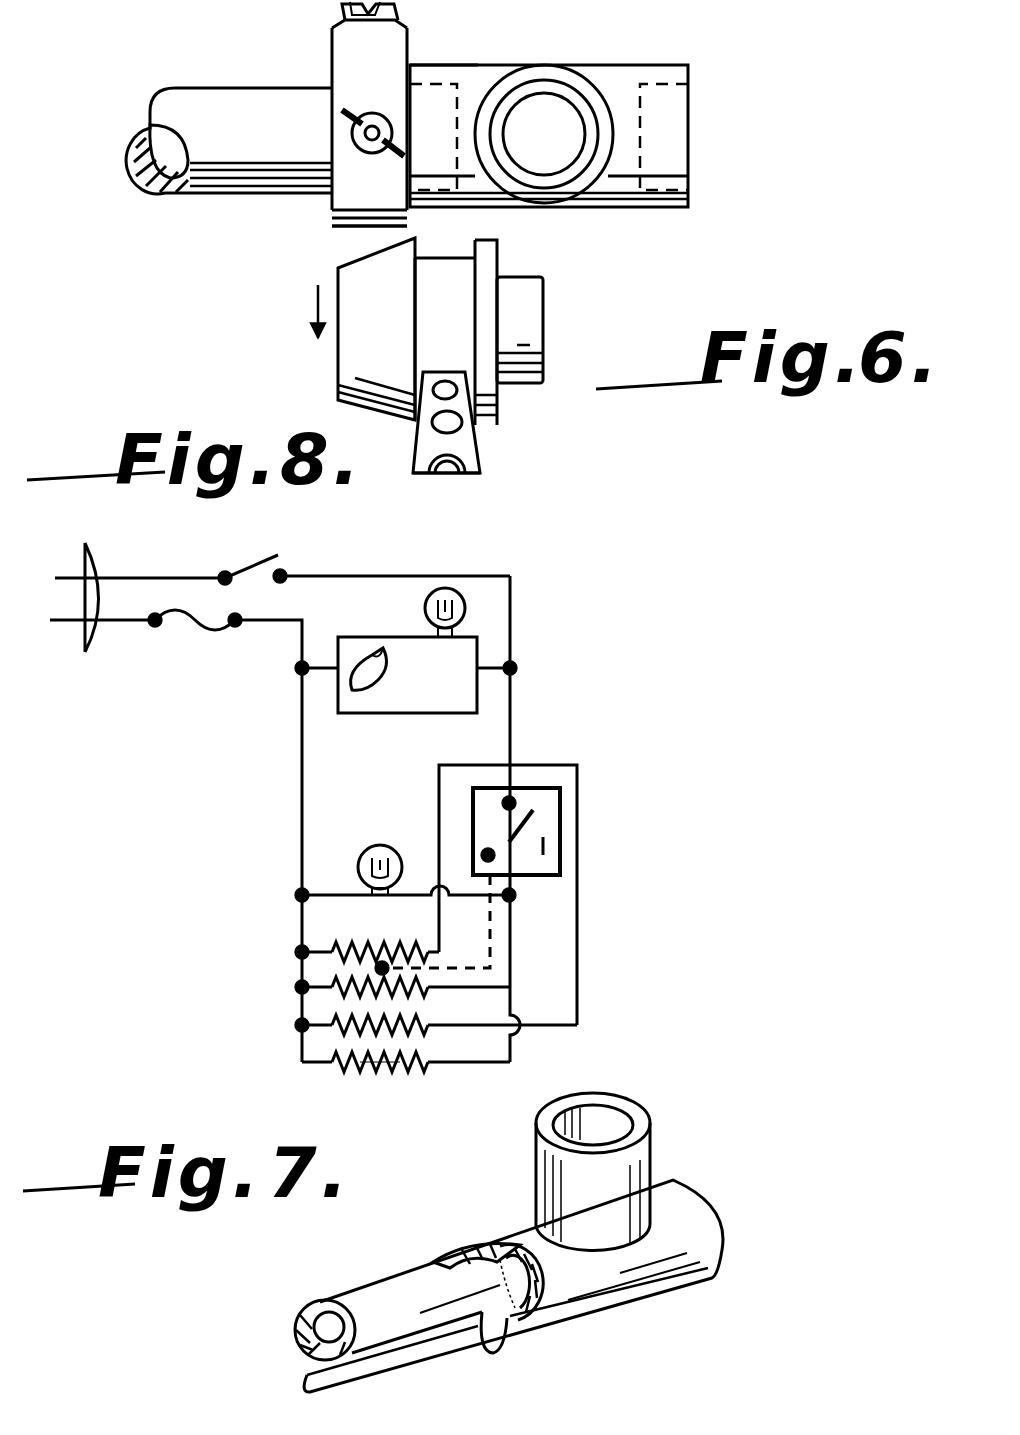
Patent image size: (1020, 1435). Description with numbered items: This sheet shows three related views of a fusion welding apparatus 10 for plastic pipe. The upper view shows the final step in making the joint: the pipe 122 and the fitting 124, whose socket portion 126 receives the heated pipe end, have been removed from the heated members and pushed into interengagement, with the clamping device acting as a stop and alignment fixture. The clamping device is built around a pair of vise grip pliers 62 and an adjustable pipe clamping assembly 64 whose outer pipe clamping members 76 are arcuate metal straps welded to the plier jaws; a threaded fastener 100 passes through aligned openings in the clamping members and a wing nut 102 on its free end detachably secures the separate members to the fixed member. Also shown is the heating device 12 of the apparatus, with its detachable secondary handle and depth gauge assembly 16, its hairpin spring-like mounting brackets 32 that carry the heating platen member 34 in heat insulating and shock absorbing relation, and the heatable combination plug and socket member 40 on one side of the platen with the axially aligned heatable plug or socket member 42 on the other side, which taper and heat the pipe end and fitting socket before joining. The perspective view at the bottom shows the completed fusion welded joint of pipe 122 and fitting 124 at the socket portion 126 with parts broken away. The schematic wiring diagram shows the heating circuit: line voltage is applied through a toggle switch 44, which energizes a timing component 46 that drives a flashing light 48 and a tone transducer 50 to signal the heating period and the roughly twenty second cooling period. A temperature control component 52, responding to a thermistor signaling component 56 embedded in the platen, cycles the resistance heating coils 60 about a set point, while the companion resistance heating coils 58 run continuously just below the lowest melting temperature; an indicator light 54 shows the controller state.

In FIG. 6, the apparatus 10 is at (494, 503).
In FIG. 6, the heating device 12 is at (482, 470).
In FIG. 6, the secondary handle and depth gauge assembly 16 is at (432, 32).
In FIG. 6, the hairpin spring-like mounting brackets 32 is at (465, 444).
In FIG. 6, the heating platen member 34 is at (455, 282).
In FIG. 6, the combination plug and socket member 40 is at (348, 355).
In FIG. 6, the heatable plug or socket member 42 is at (545, 312).
In FIG. 8, the toggle switch 44 is at (255, 555).
In FIG. 8, the timing component 46 is at (393, 703).
In FIG. 8, the flashing light 48 is at (425, 606).
In FIG. 8, the tone transducer 50 is at (390, 670).
In FIG. 8, the temperature control component 52 is at (545, 823).
In FIG. 8, the indicator light 54 is at (423, 812).
In FIG. 8, the thermistor signaling component 56 is at (455, 968).
In FIG. 8, the resistance heating coils 58 is at (380, 1027).
In FIG. 8, the resistance heating coils 60 is at (396, 990).
In FIG. 6, the vise grip pliers 62 is at (340, 10).
In FIG. 6, the adjustable pipe clamping assembly 64 is at (326, 232).
In FIG. 6, the outer pipe clamping members 76 is at (348, 204).
In FIG. 6, the threaded fastener 100 is at (362, 138).
In FIG. 6, the wing nut 102 is at (340, 118).
In FIG. 6, the pipe 122 is at (203, 55).
In FIG. 7, the pipe 122 is at (375, 1302).
In FIG. 6, the fitting 124 is at (598, 75).
In FIG. 7, the fitting 124 is at (580, 1283).
In FIG. 6, the socket portion 126 is at (430, 67).
In FIG. 7, the socket portion 126 is at (493, 1247).